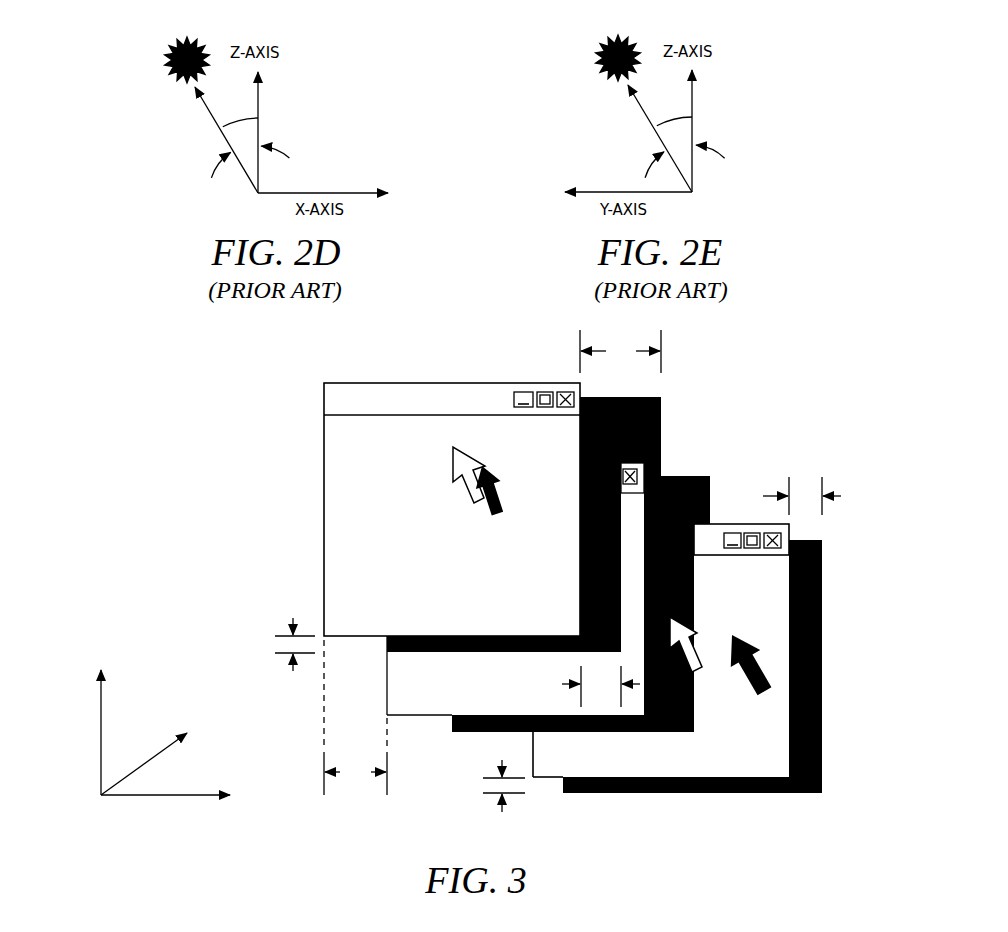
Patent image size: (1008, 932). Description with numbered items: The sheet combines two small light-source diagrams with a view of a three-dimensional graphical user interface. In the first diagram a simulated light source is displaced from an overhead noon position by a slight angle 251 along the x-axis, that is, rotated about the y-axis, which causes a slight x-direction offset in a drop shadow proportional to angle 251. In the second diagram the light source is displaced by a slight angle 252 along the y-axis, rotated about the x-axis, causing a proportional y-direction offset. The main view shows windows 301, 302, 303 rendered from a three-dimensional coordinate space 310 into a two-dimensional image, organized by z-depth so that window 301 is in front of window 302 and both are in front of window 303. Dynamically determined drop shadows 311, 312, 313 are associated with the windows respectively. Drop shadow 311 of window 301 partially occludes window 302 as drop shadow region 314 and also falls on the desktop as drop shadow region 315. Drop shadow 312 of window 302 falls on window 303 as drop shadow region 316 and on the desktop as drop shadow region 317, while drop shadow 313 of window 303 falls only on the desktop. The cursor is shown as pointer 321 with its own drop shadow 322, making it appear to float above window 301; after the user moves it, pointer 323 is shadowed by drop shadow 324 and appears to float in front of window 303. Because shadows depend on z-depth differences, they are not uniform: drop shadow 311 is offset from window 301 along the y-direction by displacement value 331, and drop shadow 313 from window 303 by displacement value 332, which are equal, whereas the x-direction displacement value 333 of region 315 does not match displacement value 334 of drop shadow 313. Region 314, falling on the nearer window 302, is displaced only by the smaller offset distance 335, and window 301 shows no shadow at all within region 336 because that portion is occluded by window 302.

In FIG. 2D, the angle 251 is at (287, 167).
In FIG. 2E, the angle 252 is at (722, 166).
In FIG. 3, the window 301 is at (440, 621).
In FIG. 3, the window 302 is at (502, 699).
In FIG. 3, the window 303 is at (645, 762).
In FIG. 3, the three-dimensional coordinate space 310 is at (105, 797).
In FIG. 3, the dynamically determined drop shadow 311 is at (661, 428).
In FIG. 3, the dynamically determined drop shadow 312 is at (710, 487).
In FIG. 3, the dynamically determined drop shadow 313 is at (822, 648).
In FIG. 3, the drop shadow region 314 is at (615, 621).
In FIG. 3, the drop shadow region 315 is at (650, 439).
In FIG. 3, the drop shadow region 316 is at (683, 699).
In FIG. 3, the drop shadow region 317 is at (700, 507).
In FIG. 3, the pointer 321 is at (467, 451).
In FIG. 3, the drop shadow 322 is at (503, 508).
In FIG. 3, the pointer 323 is at (693, 650).
In FIG. 3, the dynamically determined drop shadow 324 is at (738, 633).
In FIG. 3, the displacement value 331 is at (295, 655).
In FIG. 3, the displacement value 332 is at (504, 797).
In FIG. 3, the displacement value 333 is at (620, 351).
In FIG. 3, the displacement value 334 is at (824, 496).
In FIG. 3, the offset distance 335 is at (601, 686).
In FIG. 3, the region 336 is at (355, 717).